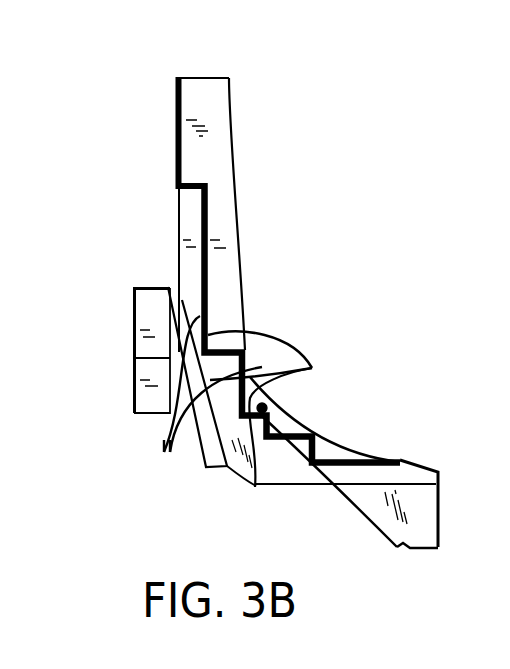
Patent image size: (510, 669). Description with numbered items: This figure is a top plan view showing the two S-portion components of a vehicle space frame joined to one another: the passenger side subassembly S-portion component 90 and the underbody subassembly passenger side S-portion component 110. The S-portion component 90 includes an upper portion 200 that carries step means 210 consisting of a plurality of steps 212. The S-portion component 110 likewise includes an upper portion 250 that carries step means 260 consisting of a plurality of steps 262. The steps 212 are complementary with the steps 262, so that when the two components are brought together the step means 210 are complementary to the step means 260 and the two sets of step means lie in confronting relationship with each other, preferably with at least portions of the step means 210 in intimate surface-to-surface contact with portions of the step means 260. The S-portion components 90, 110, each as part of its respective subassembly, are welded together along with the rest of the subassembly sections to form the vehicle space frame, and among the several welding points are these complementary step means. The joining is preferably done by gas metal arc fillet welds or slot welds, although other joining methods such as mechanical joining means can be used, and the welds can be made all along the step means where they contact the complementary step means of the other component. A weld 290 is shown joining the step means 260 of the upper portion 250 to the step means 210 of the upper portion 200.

The upper portion 200 is at (205, 107).
The S-portion component 90 is at (244, 149).
The upper portion 250 is at (188, 227).
The S-portion component 110 is at (130, 352).
The step means 210 is at (212, 295).
The steps 212 is at (290, 372).
The step means 260 is at (233, 395).
The steps 262 is at (183, 418).
The weld 290 is at (256, 487).